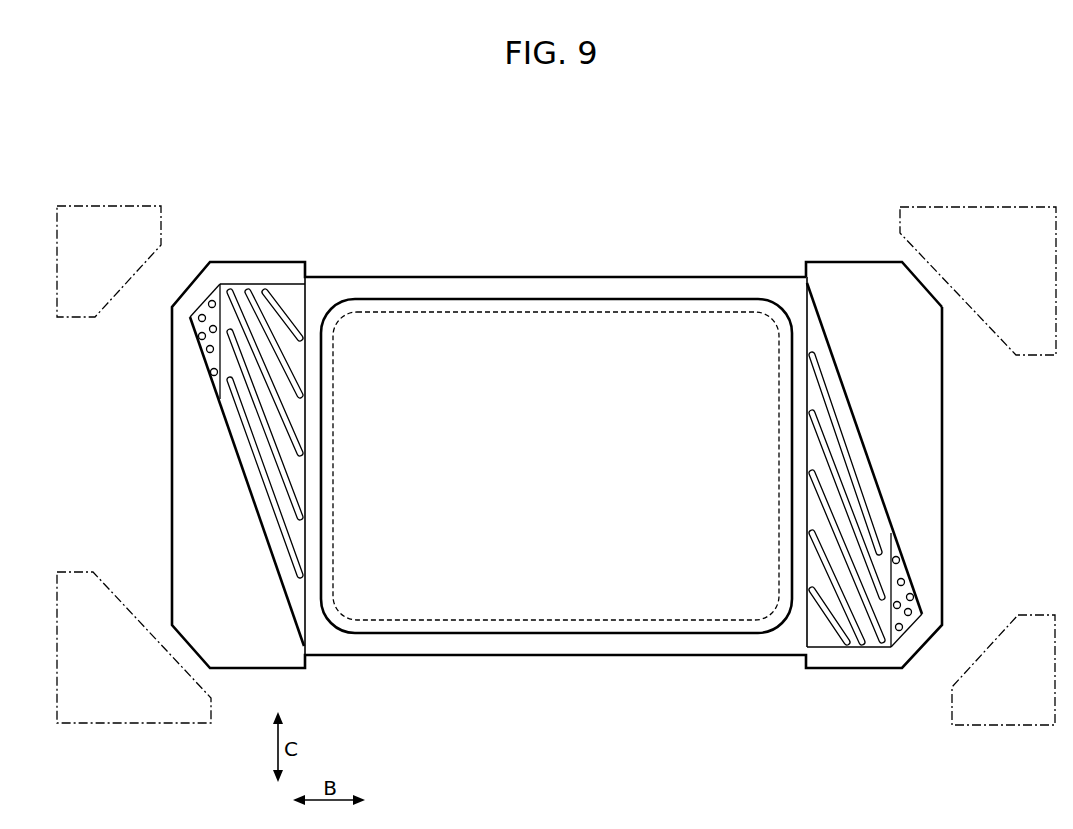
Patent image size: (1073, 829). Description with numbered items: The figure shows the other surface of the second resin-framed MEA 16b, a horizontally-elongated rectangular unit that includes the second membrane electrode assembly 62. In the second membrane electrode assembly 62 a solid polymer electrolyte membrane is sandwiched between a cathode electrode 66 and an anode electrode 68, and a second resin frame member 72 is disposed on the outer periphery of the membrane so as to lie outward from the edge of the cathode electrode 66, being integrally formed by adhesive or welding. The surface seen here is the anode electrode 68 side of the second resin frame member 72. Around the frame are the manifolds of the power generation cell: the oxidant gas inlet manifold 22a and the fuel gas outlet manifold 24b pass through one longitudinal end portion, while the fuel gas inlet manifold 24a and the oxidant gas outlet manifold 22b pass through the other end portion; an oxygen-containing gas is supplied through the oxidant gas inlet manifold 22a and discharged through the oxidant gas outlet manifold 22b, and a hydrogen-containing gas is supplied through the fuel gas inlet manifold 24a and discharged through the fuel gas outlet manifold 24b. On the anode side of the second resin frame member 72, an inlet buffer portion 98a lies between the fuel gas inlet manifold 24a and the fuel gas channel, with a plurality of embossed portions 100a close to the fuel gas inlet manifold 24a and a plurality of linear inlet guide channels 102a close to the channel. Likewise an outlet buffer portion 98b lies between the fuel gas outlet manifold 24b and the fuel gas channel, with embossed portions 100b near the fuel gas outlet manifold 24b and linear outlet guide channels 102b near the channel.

The second resin-framed MEA 16b is at (327, 169).
The second resin frame member 72 is at (822, 254).
The outlet buffer portion 98b is at (250, 264).
The linear outlet guide channels 102b is at (278, 429).
The embossed portions 100b is at (209, 349).
The inlet buffer portion 98a is at (862, 666).
The linear inlet guide channels 102a is at (833, 500).
The embossed portions 100a is at (904, 582).
The second membrane electrode assembly 62 is at (580, 290).
The anode electrode 68 is at (416, 303).
The cathode electrode 66 is at (476, 325).
The fuel gas outlet manifold 24b is at (98, 228).
The oxidant gas outlet manifold 22b is at (973, 226).
The oxidant gas inlet manifold 22a is at (113, 702).
The fuel gas inlet manifold 24a is at (995, 705).